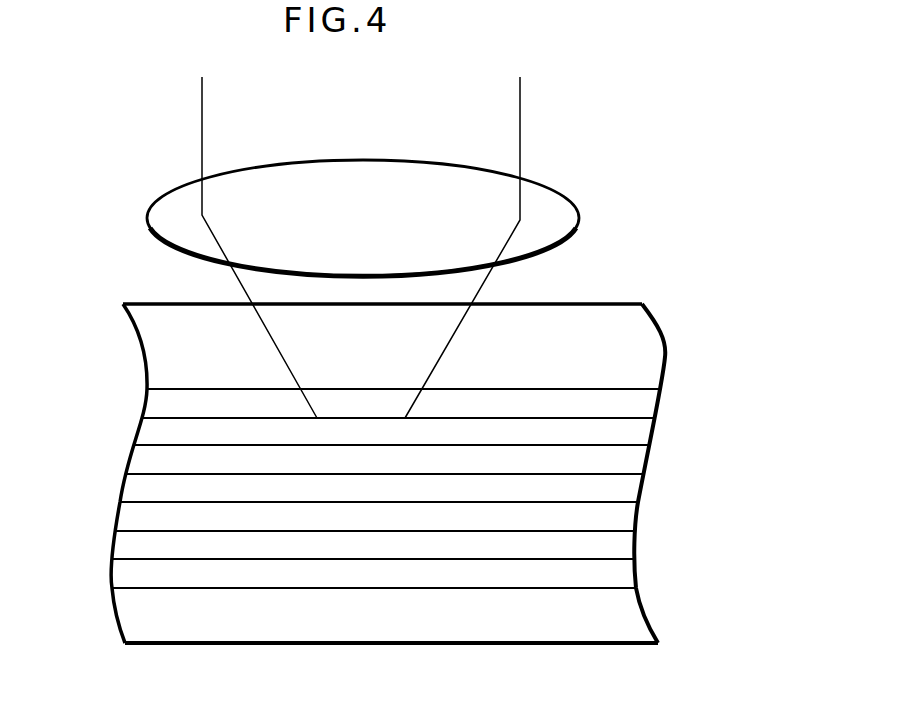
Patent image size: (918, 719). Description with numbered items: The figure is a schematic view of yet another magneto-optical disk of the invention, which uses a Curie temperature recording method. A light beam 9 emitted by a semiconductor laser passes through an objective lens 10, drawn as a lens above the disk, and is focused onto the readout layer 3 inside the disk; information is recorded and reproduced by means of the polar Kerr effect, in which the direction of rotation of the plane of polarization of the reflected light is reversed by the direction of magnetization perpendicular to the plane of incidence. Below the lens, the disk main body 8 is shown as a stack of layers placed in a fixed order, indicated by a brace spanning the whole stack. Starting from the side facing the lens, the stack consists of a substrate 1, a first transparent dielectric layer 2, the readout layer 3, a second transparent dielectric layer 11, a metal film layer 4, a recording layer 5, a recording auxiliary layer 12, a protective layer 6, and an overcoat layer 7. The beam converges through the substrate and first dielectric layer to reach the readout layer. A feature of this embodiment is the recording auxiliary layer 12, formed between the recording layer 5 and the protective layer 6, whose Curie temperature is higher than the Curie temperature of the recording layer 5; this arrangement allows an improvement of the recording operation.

The substrate 1 is at (665, 350).
The first transparent dielectric layer 2 is at (661, 408).
The readout layer 3 is at (656, 437).
The second transparent dielectric layer 11 is at (650, 463).
The metal film layer 4 is at (640, 497).
The recording layer 5 is at (637, 524).
The recording auxiliary layer 12 is at (635, 553).
The protective layer 6 is at (637, 585).
The overcoat layer 7 is at (655, 626).
The disk main body 8 is at (103, 286).
The light beam 9 is at (520, 112).
The objective lens 10 is at (580, 212).